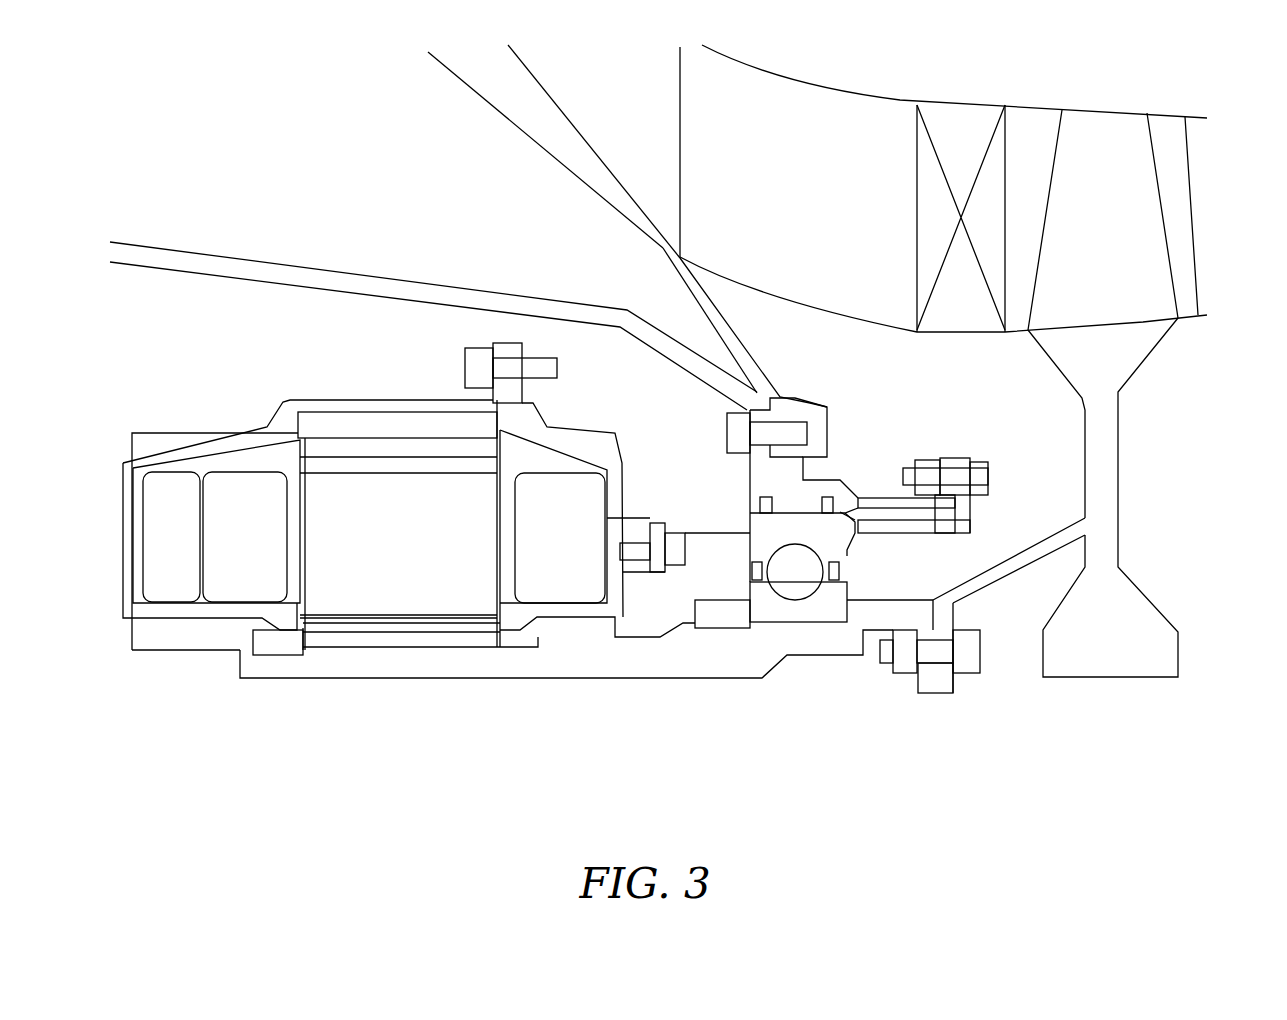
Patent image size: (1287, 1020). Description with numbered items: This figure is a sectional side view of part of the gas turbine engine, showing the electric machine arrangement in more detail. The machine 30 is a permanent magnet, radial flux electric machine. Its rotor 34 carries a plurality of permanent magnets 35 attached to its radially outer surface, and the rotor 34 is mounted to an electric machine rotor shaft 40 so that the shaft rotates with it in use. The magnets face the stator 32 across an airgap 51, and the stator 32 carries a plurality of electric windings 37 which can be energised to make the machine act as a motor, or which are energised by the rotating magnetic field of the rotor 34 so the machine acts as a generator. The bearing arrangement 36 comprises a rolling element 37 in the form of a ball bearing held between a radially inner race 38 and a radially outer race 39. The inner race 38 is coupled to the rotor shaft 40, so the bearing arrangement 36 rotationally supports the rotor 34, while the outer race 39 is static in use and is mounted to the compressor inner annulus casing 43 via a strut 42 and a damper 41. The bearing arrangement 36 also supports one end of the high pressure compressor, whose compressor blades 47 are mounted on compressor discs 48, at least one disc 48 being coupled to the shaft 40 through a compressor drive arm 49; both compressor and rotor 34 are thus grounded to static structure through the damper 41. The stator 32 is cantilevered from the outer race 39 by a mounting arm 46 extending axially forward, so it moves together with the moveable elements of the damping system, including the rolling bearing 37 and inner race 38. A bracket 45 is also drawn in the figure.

The machine 30 is at (405, 708).
The stator 32 is at (258, 418).
The rotor 34 is at (482, 634).
The permanent magnets 35 is at (327, 630).
The bearing arrangement 36 is at (803, 688).
The electric windings 37 is at (232, 483).
The radially inner race 38 is at (768, 615).
The radially outer race 39 is at (757, 527).
The electric machine rotor shaft 40 is at (632, 680).
The damper 41 is at (760, 507).
The strut 42 is at (687, 285).
The compressor inner annulus casing 43 is at (563, 167).
The mount bracket 45 is at (815, 430).
The mounting arm 46 is at (667, 525).
The compressor blades 47 is at (1160, 255).
The compressor discs 48 is at (1113, 507).
The compressor drive arm 49 is at (1003, 570).
The airgap 51 is at (432, 618).